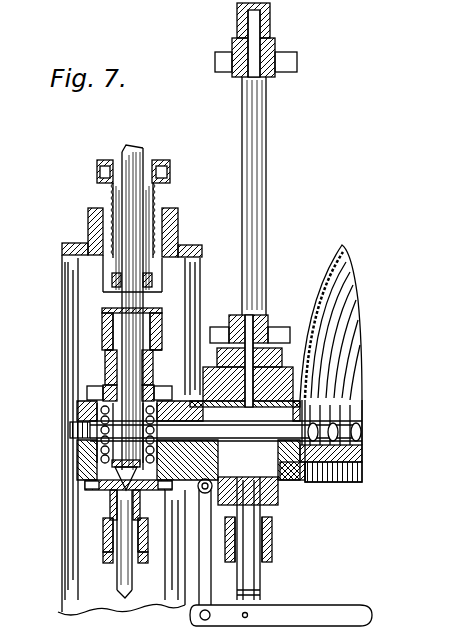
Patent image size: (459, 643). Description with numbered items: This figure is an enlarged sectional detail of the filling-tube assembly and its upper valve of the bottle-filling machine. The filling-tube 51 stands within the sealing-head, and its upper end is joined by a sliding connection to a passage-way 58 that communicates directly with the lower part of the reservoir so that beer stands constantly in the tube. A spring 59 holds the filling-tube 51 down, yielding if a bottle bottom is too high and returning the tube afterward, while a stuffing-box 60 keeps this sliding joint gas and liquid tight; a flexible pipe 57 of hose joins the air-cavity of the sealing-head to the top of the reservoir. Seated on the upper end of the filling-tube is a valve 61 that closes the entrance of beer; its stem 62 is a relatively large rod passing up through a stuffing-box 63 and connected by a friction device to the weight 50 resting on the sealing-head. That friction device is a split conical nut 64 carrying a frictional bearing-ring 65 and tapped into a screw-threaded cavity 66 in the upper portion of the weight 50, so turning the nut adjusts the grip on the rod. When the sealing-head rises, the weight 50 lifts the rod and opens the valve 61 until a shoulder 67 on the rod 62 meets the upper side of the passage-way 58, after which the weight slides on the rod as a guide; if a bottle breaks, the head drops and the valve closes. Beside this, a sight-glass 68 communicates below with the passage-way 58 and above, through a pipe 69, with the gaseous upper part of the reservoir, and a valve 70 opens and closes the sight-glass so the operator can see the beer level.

The weight 50 is at (62, 278).
The filling-tube 51 is at (133, 590).
The flexible pipe 57 is at (327, 495).
The passage-way 58 is at (268, 432).
The spring 59 is at (100, 440).
The stuffing-box 60 is at (108, 565).
The valve 61 is at (88, 483).
The valve stem 62 is at (130, 362).
The stuffing-box 63 is at (108, 328).
The split conical nut 64 is at (160, 201).
The frictional bearing-ring 65 is at (152, 285).
The screw-threaded cavity 66 is at (178, 232).
The shoulder 67 is at (88, 465).
The sight-glass 68 is at (267, 207).
The pipe 69 is at (268, 15).
The valve 70 is at (278, 498).